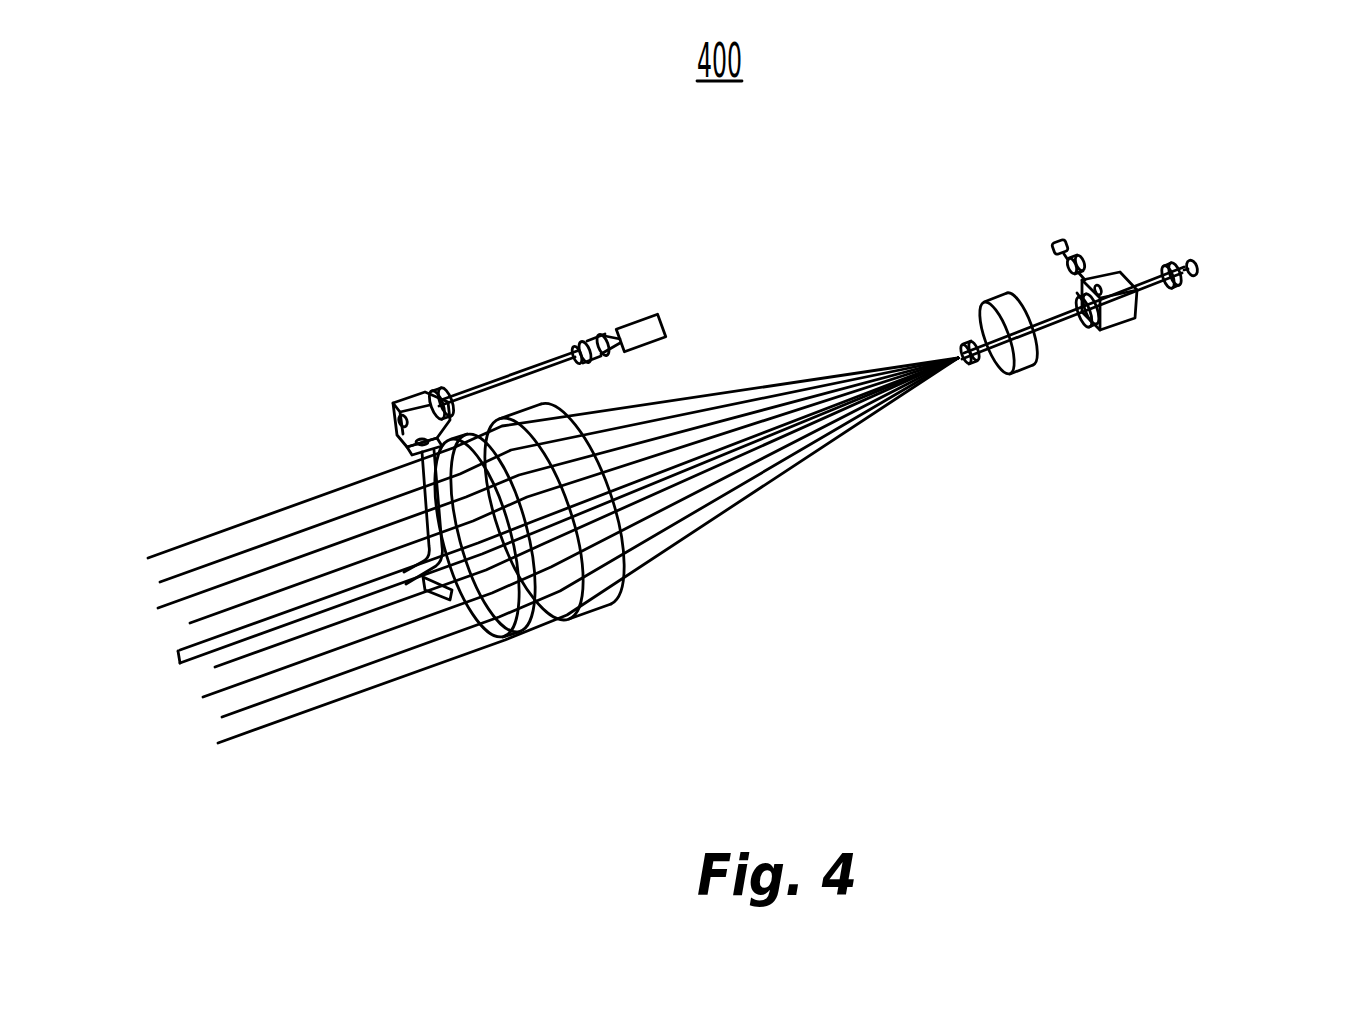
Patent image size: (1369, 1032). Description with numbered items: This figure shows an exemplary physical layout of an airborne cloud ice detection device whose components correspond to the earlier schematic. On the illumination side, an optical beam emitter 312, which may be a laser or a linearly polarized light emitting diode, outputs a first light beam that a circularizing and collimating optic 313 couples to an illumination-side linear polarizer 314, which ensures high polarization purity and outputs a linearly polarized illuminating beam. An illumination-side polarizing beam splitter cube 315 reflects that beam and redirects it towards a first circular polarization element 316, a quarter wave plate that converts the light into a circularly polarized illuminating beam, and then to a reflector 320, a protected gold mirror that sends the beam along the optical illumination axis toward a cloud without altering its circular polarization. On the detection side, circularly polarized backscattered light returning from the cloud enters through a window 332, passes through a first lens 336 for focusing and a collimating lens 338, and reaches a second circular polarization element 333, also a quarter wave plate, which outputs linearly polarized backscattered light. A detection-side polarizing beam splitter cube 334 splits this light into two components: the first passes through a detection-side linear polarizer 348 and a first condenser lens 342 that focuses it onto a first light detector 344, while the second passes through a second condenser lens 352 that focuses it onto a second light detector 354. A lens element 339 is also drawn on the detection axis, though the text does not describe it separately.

The optical beam emitter 312 is at (634, 318).
The circularizing and collimating optic 313 is at (587, 340).
The illumination-side linear polarizer 314 is at (443, 388).
The illumination-side polarizing beam splitter cube 315 is at (407, 393).
The first circular polarization element 316 is at (407, 452).
The reflector 320 is at (455, 605).
The window 332 is at (525, 640).
The first lens 336 is at (607, 612).
The collimating lens 338 is at (982, 368).
The detector lens 339 is at (1022, 374).
The second circular polarization element 333 is at (1085, 330).
The detection-side polarizing beam splitter cube 334 is at (1123, 330).
The first condenser lens 342 is at (1083, 260).
The first light detector 344 is at (1058, 240).
The detection-side linear polarizer 348 is at (1077, 293).
The second condenser lens 352 is at (1170, 265).
The second light detector 354 is at (1205, 268).